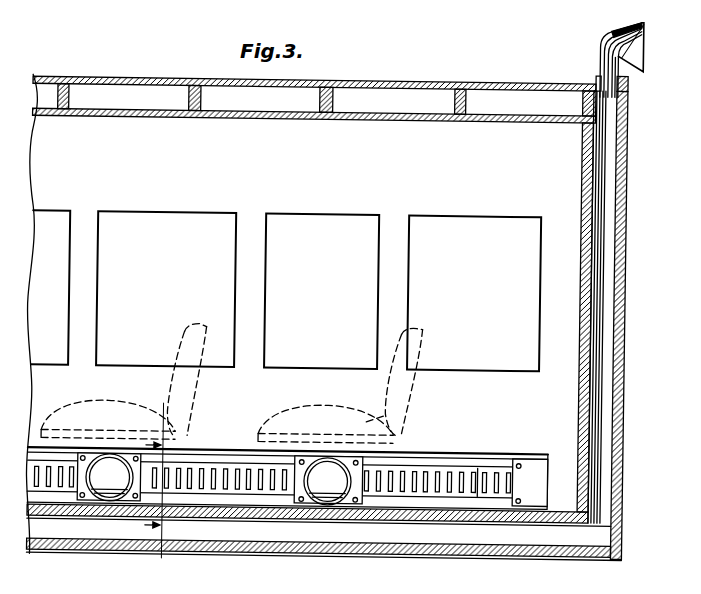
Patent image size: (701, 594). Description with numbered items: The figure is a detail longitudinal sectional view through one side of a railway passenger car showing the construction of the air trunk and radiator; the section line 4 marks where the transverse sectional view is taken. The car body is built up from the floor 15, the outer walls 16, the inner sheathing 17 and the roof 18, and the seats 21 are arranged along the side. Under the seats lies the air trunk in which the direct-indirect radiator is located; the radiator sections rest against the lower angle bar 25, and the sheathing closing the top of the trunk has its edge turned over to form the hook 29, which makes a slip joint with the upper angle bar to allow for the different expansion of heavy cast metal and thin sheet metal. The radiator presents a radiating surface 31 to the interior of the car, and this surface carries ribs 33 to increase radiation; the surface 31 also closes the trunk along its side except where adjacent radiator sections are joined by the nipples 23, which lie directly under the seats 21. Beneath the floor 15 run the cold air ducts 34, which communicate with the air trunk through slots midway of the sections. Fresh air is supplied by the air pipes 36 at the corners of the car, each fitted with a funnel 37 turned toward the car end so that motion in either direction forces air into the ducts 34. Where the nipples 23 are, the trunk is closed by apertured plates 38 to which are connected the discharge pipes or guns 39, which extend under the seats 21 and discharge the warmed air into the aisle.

The section line 4— 4 is at (156, 489).
The floor 15 is at (557, 510).
The outer walls 16 is at (624, 203).
The inner sheathing 17 is at (588, 169).
The roof 18 is at (415, 80).
The seats 21 is at (172, 393).
The nipples 23 is at (116, 480).
The lower angle bar 25 is at (410, 498).
The hook 29 is at (466, 458).
The radiating surface 31 is at (481, 470).
The ribs 33 is at (513, 478).
The cold air ducts 34 is at (82, 525).
The air pipes 36 is at (600, 302).
The funnels 37 is at (628, 24).
The plates 38 is at (137, 474).
The discharge pipes or guns 39 is at (100, 452).